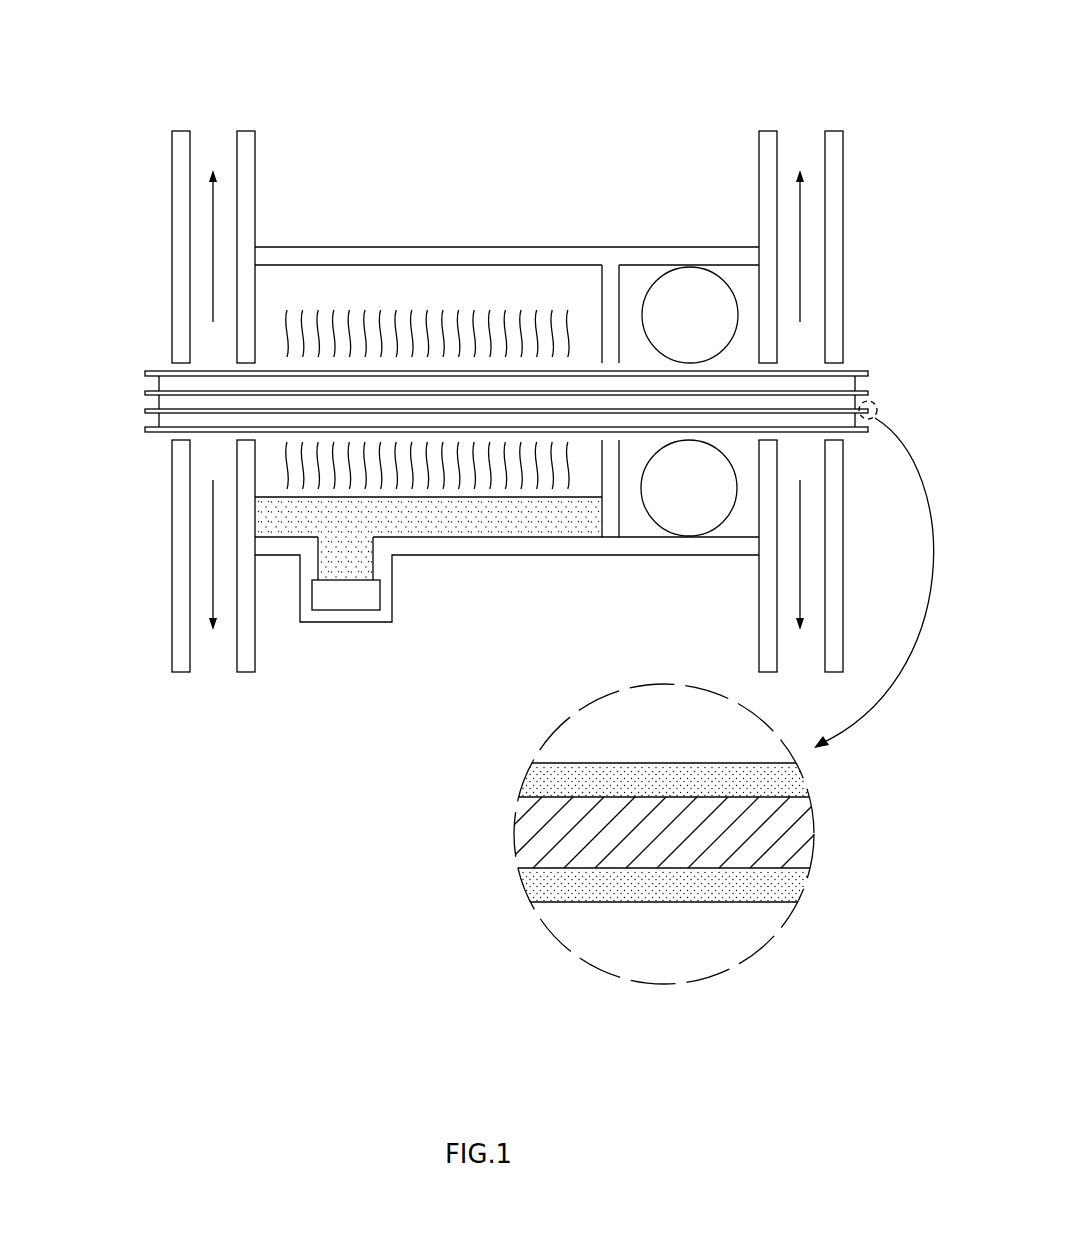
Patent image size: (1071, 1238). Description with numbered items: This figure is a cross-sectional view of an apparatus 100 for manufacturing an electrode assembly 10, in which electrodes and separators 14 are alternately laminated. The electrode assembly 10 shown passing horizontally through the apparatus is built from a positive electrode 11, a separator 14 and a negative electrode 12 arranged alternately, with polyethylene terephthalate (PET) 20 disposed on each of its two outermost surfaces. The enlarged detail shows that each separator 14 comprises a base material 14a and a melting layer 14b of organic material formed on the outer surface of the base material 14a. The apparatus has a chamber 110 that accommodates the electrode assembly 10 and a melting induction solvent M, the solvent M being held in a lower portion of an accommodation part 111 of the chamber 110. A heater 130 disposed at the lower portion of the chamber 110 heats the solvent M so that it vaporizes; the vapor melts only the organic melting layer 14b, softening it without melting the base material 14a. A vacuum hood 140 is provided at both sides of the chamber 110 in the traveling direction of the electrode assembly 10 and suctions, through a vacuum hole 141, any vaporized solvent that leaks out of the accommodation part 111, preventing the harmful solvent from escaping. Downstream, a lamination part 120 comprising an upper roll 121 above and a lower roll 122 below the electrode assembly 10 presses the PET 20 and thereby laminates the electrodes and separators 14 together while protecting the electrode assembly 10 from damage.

The apparatus for manufacturing the electrode assembly 100 is at (722, 66).
The electrode assembly 10 is at (72, 343).
The positive electrode 11 is at (158, 382).
The negative electrode 12 is at (158, 401).
The separator 14 is at (146, 393).
The base material 14a is at (517, 836).
The melting layer 14b is at (530, 781).
The polyethylene terephthalate (PET) 20 is at (143, 371).
The chamber 110 is at (367, 240).
The accommodation part 111 is at (467, 278).
The lamination part 120 is at (897, 253).
The upper roll 121 is at (716, 296).
The lower roll 122 is at (722, 489).
The heater 130 is at (349, 612).
The vacuum hood 140 is at (161, 202).
The vacuum hole 141 is at (218, 347).
The melting induction solvent M is at (494, 531).